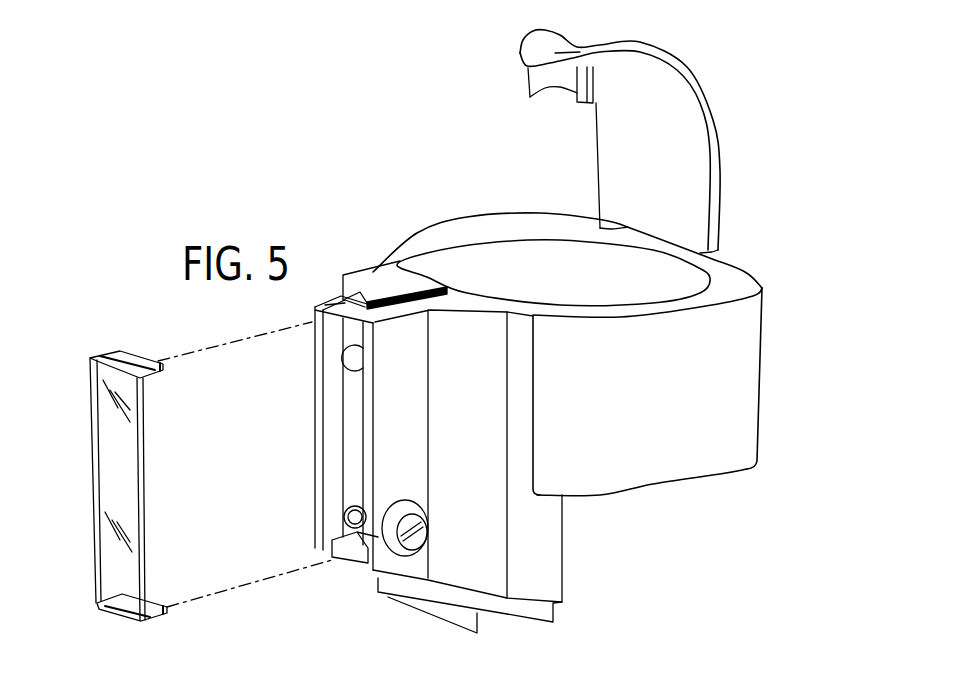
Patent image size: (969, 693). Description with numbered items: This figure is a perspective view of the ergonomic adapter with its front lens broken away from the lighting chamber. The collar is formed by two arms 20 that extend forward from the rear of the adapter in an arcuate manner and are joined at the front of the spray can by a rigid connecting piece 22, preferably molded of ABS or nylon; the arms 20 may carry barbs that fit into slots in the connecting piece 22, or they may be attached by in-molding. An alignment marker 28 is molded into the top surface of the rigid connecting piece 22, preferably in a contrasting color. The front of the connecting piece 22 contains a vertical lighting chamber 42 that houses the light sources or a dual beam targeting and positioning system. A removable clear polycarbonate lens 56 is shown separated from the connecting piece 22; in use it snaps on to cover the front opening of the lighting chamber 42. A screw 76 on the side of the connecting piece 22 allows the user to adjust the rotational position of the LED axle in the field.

The collar arms 20 is at (450, 230).
The rigid connecting piece 22 is at (552, 577).
The alignment marker 28 is at (378, 297).
The lighting chamber 42 is at (343, 445).
The clear polycarbonate lens 56 is at (92, 447).
The screw 76 is at (410, 540).